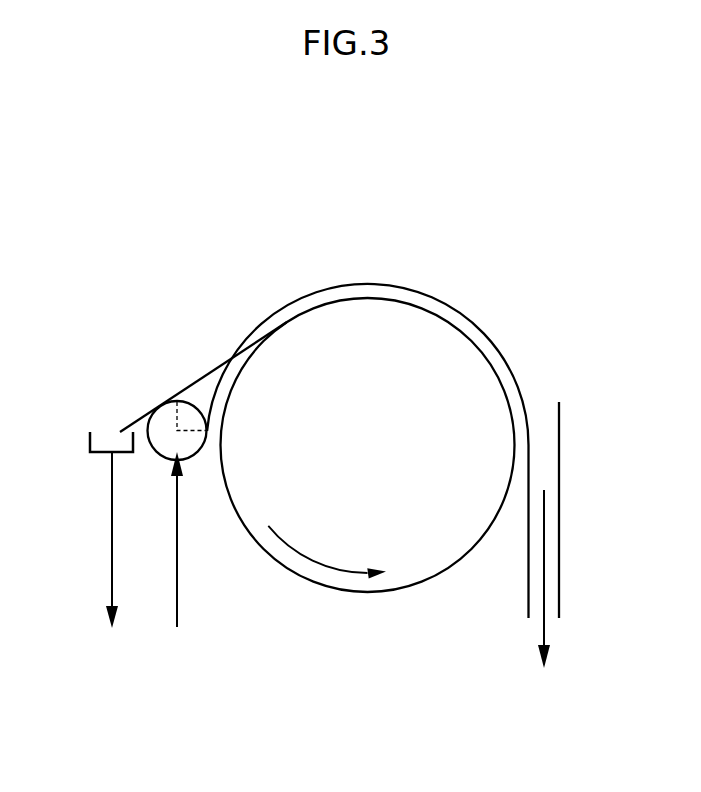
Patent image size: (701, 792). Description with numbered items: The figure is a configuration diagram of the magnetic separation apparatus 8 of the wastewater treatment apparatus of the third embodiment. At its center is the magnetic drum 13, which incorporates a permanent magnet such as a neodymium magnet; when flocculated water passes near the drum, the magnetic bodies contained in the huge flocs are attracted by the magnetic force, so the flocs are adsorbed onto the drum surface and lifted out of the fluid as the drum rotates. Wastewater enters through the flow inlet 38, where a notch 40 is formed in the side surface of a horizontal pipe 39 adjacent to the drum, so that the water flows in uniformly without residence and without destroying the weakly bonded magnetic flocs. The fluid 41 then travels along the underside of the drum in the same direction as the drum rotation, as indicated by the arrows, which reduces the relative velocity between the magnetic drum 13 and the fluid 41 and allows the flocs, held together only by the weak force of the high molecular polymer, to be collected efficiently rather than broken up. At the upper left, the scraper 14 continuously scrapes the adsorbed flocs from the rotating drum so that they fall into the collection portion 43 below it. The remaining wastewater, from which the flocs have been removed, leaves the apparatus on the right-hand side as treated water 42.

The magnetic separation apparatus 8 is at (367, 278).
The magnetic drum 13 is at (447, 358).
The scraper 14 is at (197, 381).
The flow inlet 38 is at (177, 592).
The horizontal pipe 39 is at (163, 453).
The notch 40 is at (197, 408).
The fluid 41 is at (372, 598).
The treated water 42 is at (544, 575).
The collection portion 43 is at (112, 528).